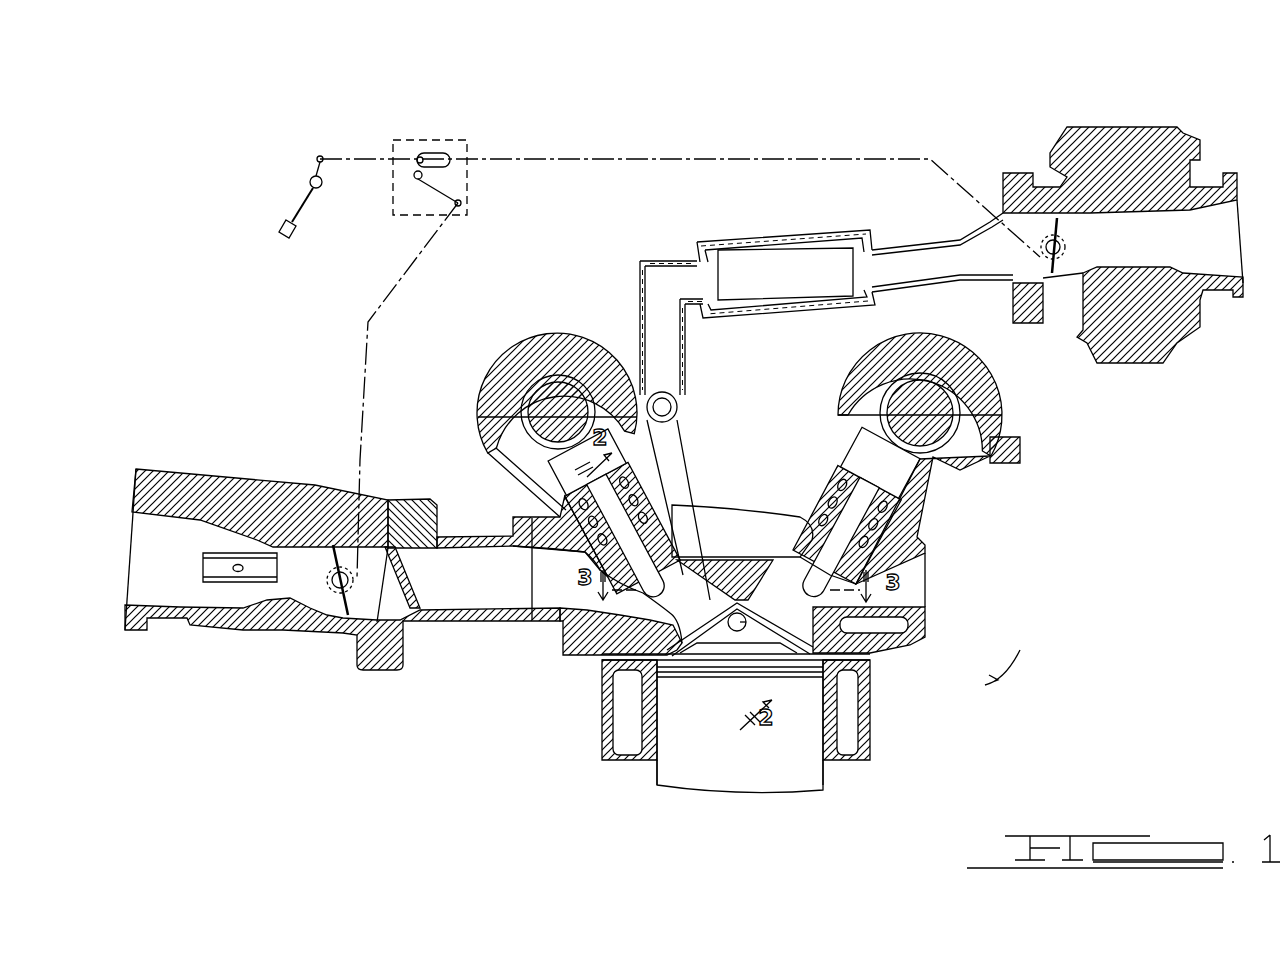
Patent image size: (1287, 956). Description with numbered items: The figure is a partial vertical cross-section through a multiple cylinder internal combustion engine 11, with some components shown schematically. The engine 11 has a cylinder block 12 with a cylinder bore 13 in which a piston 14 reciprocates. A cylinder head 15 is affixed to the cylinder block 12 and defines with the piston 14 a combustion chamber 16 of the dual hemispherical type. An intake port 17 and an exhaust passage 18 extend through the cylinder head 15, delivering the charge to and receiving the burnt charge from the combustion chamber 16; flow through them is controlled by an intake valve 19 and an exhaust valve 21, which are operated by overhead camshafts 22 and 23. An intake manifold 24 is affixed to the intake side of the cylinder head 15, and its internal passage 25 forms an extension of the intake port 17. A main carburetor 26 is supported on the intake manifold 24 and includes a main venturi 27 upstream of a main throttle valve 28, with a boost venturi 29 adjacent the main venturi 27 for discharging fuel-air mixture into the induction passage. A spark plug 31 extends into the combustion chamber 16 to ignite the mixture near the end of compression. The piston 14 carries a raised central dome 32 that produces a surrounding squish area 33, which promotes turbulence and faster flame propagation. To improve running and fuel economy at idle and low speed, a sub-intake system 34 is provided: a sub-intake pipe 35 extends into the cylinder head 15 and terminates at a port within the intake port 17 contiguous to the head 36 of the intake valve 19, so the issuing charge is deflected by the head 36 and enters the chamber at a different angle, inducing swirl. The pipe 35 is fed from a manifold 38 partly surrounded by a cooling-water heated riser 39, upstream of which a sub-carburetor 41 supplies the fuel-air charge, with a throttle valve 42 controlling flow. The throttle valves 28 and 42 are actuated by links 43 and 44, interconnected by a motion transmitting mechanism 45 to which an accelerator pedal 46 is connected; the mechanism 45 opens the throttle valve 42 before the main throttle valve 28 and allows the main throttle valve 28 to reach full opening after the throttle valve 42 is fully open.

The engine 11 is at (1014, 656).
The cylinder block 12 is at (868, 742).
The cylinder bore 13 is at (822, 752).
The piston 14 is at (823, 785).
The cylinder head 15 is at (923, 537).
The combustion chamber 16 is at (870, 657).
The intake port 17 is at (567, 602).
The exhaust passage 18 is at (900, 607).
The intake valve 19 is at (667, 547).
The exhaust valve 21 is at (805, 520).
The overhead camshaft 22 is at (545, 365).
The overhead camshaft 23 is at (956, 380).
The intake manifold 24 is at (410, 502).
The internal passage 25 is at (485, 603).
The main carburetor 26 is at (223, 468).
The main venturi 27 is at (287, 600).
The main throttle valve 28 is at (340, 592).
The boost venturi 29 is at (207, 553).
The spark plug 31 is at (740, 600).
The raised central dome 32 is at (740, 650).
The squish area 33 is at (670, 660).
The sub-intake system 34 is at (683, 236).
The sub-intake pipe 35 is at (690, 487).
The intake valve head 36 is at (667, 655).
The manifold 38 is at (683, 345).
The heat riser 39 is at (800, 240).
The sub-carburetor 41 is at (1113, 122).
The throttle valve 42 is at (1062, 232).
The link 43 is at (355, 338).
The link 44 is at (602, 158).
The motion transmitting mechanism 45 is at (440, 138).
The accelerator pedal 46 is at (305, 207).